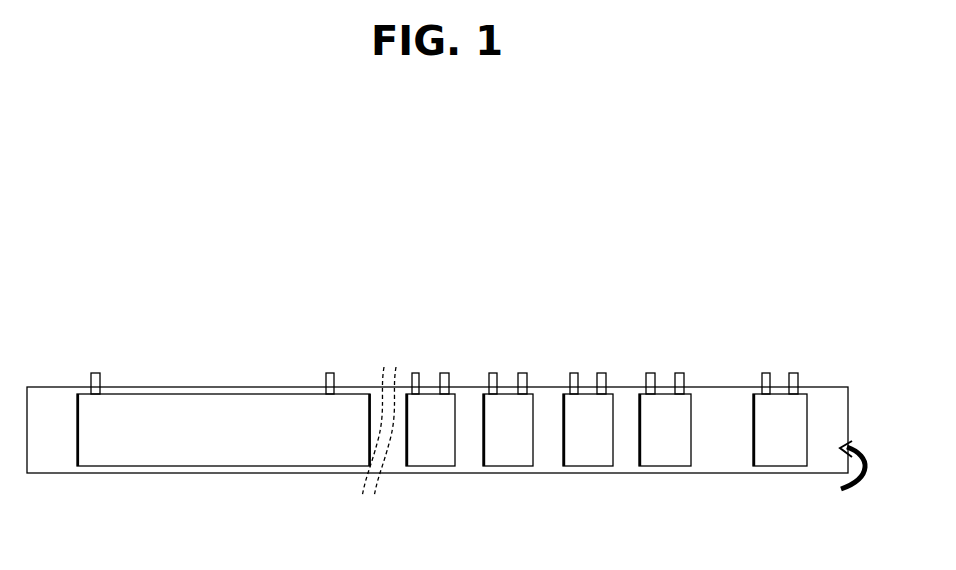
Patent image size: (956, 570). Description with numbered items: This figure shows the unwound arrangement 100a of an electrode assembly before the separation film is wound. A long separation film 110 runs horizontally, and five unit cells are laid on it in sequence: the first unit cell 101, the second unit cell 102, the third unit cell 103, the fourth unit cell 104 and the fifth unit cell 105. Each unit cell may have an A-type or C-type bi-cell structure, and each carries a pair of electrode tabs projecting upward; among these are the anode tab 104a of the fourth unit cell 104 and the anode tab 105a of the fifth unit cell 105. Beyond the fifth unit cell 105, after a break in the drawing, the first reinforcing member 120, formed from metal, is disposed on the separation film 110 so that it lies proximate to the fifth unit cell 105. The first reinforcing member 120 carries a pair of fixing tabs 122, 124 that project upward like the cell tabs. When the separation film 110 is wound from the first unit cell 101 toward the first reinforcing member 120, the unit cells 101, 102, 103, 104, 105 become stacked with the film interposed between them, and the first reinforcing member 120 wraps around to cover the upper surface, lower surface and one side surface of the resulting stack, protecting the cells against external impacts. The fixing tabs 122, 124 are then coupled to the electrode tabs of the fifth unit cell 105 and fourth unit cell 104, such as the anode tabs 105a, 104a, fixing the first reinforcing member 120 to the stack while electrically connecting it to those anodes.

The arrangement 100a is at (112, 297).
The separation film 110 is at (713, 395).
The first reinforcing member 120 is at (227, 452).
The fixing tab 122 is at (100, 373).
The fixing tab 124 is at (334, 373).
The first unit cell 101 is at (783, 452).
The second unit cell 102 is at (668, 452).
The third unit cell 103 is at (592, 452).
The fourth unit cell 104 is at (525, 430).
The anode tab 104a is at (523, 373).
The fifth unit cell 105 is at (429, 430).
The anode tab 105a is at (415, 372).